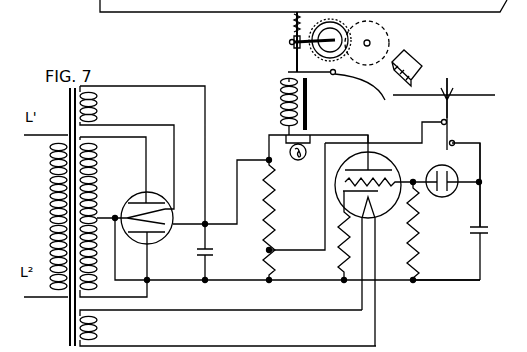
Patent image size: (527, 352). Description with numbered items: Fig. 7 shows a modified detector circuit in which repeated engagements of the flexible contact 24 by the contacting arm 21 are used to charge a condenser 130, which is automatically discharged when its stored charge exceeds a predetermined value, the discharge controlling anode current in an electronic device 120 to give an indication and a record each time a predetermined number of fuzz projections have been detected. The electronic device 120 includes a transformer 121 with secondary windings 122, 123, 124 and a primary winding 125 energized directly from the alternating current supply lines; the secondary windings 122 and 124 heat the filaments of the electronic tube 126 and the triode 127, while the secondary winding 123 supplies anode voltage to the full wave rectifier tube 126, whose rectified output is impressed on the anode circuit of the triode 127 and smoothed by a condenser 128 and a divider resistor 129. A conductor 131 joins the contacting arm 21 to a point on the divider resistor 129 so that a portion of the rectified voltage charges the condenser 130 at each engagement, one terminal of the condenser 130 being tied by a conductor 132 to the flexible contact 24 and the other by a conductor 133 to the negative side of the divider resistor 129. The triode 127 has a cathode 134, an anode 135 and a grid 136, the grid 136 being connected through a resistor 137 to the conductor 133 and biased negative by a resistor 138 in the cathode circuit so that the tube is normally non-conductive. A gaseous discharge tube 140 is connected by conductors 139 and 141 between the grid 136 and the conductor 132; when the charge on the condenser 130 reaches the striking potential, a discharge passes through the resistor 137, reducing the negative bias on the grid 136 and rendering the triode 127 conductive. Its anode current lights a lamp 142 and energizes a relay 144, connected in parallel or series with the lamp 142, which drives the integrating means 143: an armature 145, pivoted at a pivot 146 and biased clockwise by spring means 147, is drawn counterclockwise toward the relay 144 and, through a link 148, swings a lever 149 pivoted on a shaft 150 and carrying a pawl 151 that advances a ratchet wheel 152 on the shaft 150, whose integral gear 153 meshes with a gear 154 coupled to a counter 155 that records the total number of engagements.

The contacting arm 21 is at (449, 106).
The flexible contact 24 is at (455, 141).
The electronic device 120 is at (265, 125).
The transformer 121 is at (70, 322).
The secondary winding 122 is at (100, 106).
The secondary winding 123 is at (99, 180).
The secondary winding 124 is at (99, 328).
The primary winding 125 is at (50, 209).
The electronic tube 126 is at (152, 198).
The triode 127 is at (343, 192).
The condenser 128 is at (214, 255).
The divider resistor 129 is at (277, 202).
The condenser 130 is at (489, 232).
The conductor 131 is at (378, 143).
The conductor 132 is at (482, 150).
The conductor 133 is at (452, 281).
The cathode 134 is at (343, 212).
The anode 135 is at (387, 166).
The grid 136 is at (383, 271).
The resistor 137 is at (420, 246).
The resistor 138 is at (337, 258).
The conductor 139 is at (442, 197).
The gaseous discharge tube 140 is at (456, 168).
The conductor 141 is at (472, 183).
The lamp 142 is at (298, 160).
The integrating means 143 is at (228, 18).
The relay 144 is at (308, 110).
The armature 145 is at (288, 72).
The pivot 146 is at (378, 86).
The spring means 147 is at (292, 22).
The link 148 is at (294, 56).
The lever 149 is at (290, 42).
The shaft 150 is at (383, 111).
The pawl 151 is at (336, 72).
The ratchet wheel 152 is at (350, 30).
The gear 153 is at (388, 36).
The gear 154 is at (371, 44).
The counter 155 is at (422, 67).